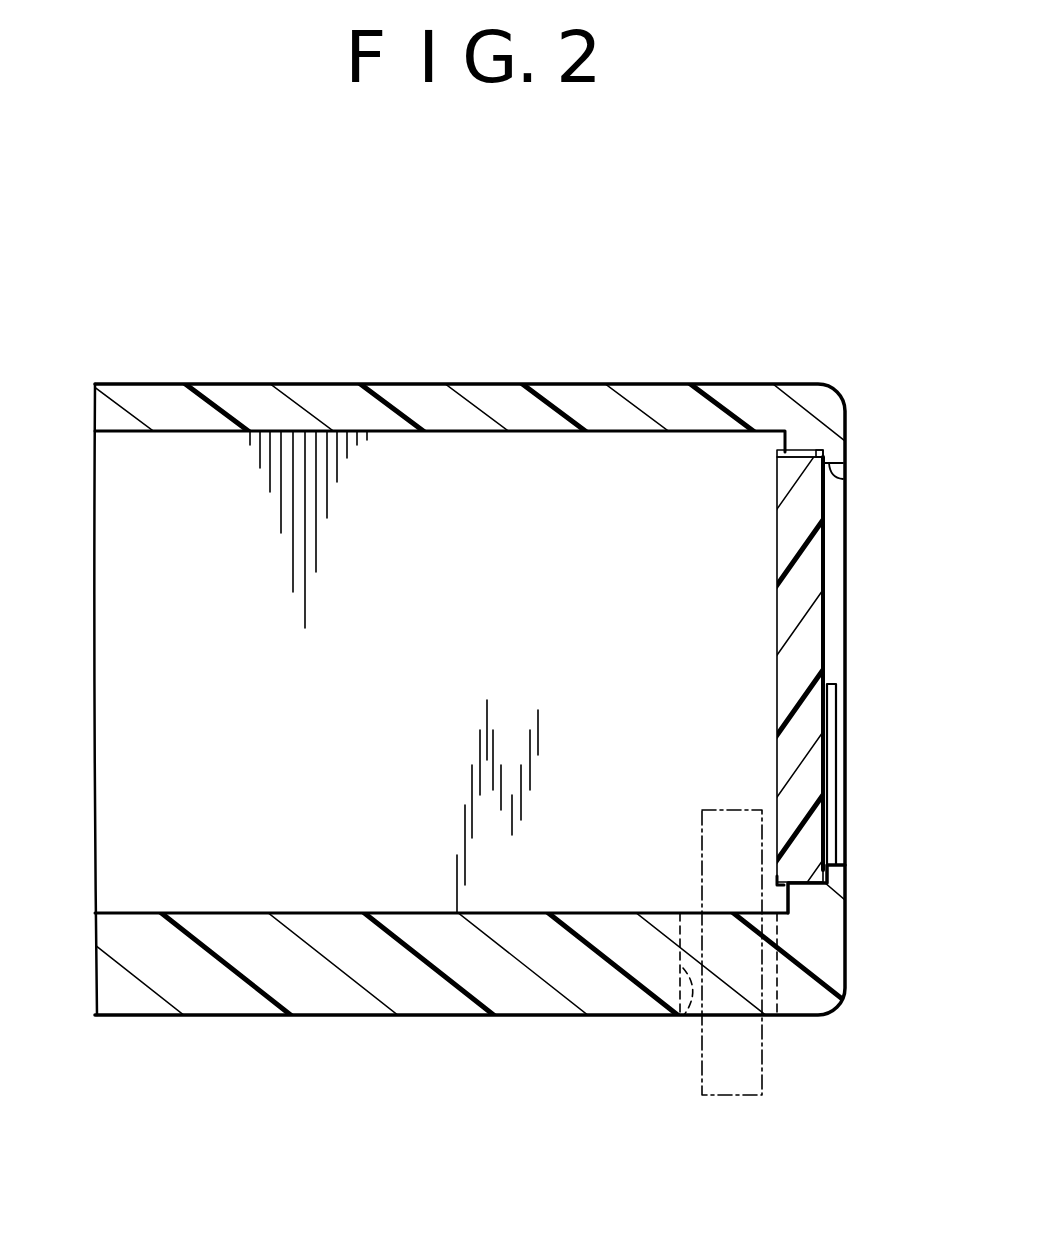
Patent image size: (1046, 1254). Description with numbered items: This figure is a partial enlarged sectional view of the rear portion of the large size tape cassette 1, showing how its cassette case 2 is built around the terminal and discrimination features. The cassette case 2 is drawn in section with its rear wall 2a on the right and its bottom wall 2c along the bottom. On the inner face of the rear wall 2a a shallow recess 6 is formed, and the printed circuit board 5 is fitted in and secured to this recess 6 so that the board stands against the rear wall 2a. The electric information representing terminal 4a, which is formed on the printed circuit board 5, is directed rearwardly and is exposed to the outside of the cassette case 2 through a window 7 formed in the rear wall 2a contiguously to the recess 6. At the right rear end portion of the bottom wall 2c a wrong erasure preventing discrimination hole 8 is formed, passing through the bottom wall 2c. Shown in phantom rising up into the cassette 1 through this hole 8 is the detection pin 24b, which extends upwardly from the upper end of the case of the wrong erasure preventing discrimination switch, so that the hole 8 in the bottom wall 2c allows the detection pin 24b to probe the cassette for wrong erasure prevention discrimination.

The tape cassette 1 is at (548, 257).
The cassette case 2 is at (582, 384).
The rear wall 2a is at (833, 909).
The bottom wall 2c is at (430, 998).
The printed circuit board 5 is at (795, 607).
The shallow recess 6 is at (818, 453).
The window 7 is at (845, 479).
The electric information representing terminal 4a is at (835, 742).
The detection pin 24b is at (718, 808).
The wrong erasure preventing discrimination hole 8 is at (684, 1015).